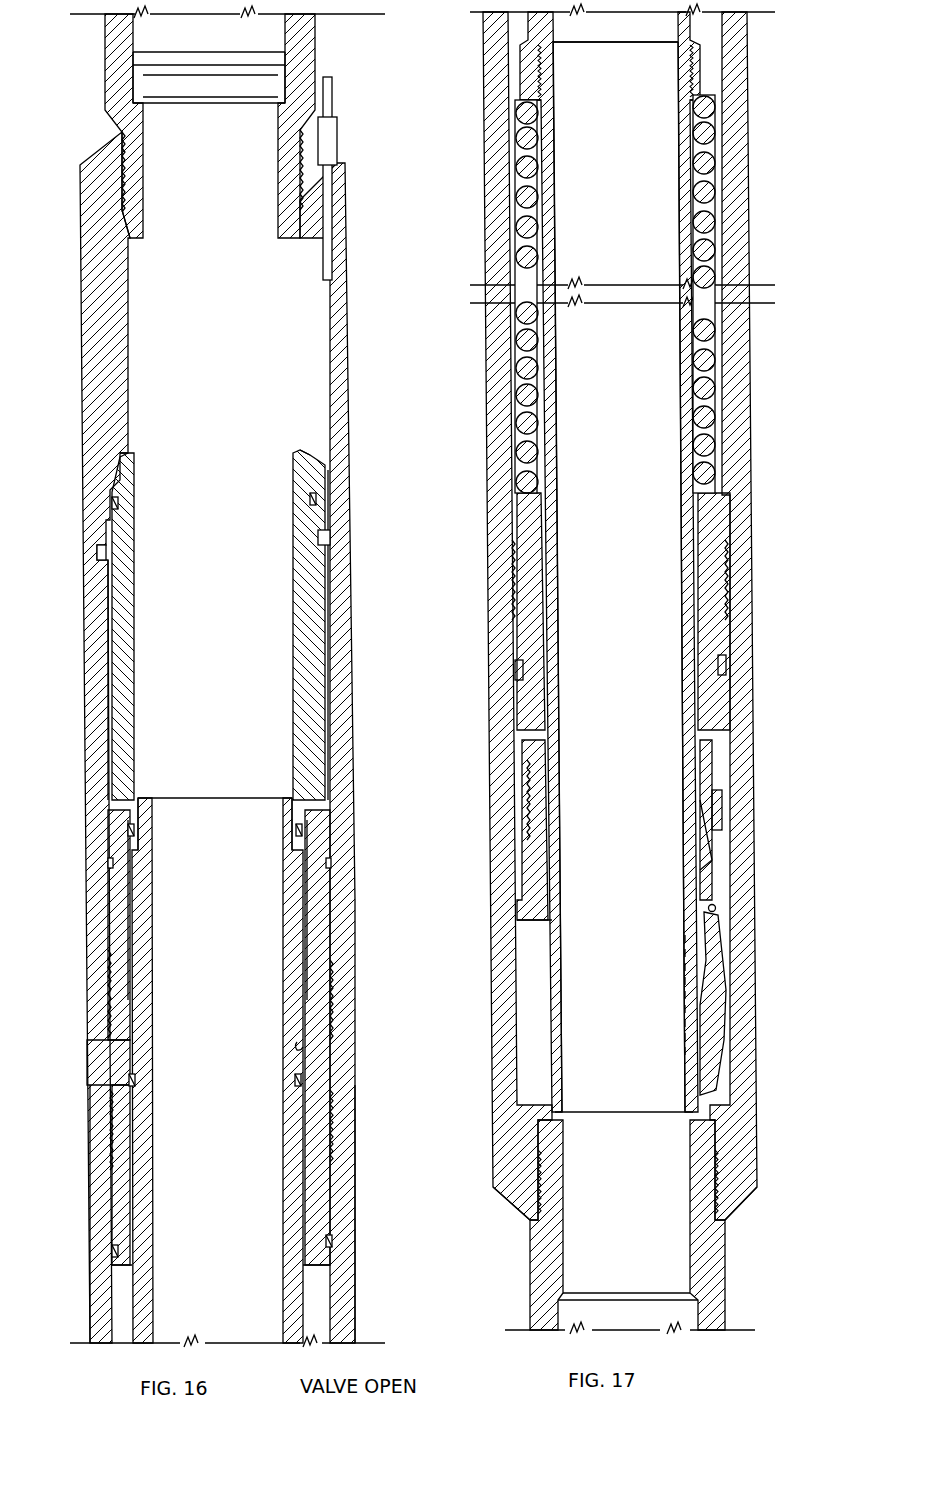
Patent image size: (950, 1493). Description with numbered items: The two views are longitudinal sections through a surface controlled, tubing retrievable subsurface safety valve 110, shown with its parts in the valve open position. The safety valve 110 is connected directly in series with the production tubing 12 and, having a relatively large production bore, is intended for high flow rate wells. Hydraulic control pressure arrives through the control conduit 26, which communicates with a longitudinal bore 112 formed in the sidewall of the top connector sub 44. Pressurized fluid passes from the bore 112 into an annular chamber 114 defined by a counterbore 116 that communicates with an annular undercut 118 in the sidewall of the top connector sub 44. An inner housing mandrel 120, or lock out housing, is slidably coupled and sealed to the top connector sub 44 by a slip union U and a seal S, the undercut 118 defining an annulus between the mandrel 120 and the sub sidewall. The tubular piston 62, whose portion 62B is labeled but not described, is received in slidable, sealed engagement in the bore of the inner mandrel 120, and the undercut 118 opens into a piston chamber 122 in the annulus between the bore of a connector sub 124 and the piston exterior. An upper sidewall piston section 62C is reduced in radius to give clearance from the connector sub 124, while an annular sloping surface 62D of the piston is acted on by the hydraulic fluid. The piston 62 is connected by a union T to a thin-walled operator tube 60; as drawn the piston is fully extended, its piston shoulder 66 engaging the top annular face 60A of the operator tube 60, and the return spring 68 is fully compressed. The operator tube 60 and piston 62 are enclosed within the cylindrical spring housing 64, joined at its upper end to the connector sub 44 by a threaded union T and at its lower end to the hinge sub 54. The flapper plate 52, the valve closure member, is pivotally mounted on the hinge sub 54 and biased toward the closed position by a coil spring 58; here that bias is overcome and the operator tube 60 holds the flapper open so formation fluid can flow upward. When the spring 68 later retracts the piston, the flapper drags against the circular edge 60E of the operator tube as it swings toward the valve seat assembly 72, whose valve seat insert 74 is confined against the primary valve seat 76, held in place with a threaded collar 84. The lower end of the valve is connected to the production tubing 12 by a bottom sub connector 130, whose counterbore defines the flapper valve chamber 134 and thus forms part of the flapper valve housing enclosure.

In FIG. 16, the production tubing 12 is at (285, 62).
In FIG. 17, the production tubing 12 is at (727, 1238).
In FIG. 16, the control conduit 26 is at (336, 95).
In FIG. 16, the top connector sub 44 is at (85, 340).
In FIG. 17, the flapper plate 52 is at (712, 985).
In FIG. 17, the hinge sub 54 is at (724, 875).
In FIG. 17, the coil spring 58 is at (717, 909).
In FIG. 17, the operator tube 60 is at (690, 850).
In FIG. 17, the top annular face of operator tube 60A is at (610, 42).
In FIG. 17, the circular edge of operator tube 60E is at (596, 1113).
In FIG. 16, the piston 62 is at (157, 1196).
In FIG. 17, the piston 62 is at (553, 36).
In FIG. 16, the piston portion of mandrel 62B is at (185, 798).
In FIG. 16, the upper sidewall piston section 62C is at (145, 915).
In FIG. 16, the annular sloping surface 62D is at (296, 1044).
In FIG. 16, the spring housing 64 is at (95, 1306).
In FIG. 17, the spring housing 64 is at (492, 52).
In FIG. 17, the piston shoulder 66 is at (560, 47).
In FIG. 17, the return spring 68 is at (716, 390).
In FIG. 17, the valve seat assembly 72 is at (772, 865).
In FIG. 17, the valve seat insert 74 is at (515, 890).
In FIG. 17, the primary valve seat 76 is at (700, 856).
In FIG. 17, the threaded collar 84 is at (722, 815).
In FIG. 16, the tubing retrievable subsurface safety valve 110 is at (366, 272).
In FIG. 17, the tubing retrievable subsurface safety valve 110 is at (782, 152).
In FIG. 16, the longitudinal bore 112 is at (338, 338).
In FIG. 16, the annular chamber 114 is at (325, 540).
In FIG. 16, the counterbore 116 is at (97, 552).
In FIG. 16, the annular undercut 118 is at (108, 640).
In FIG. 16, the inner housing mandrel 120 is at (120, 710).
In FIG. 16, the piston chamber 122 is at (305, 970).
In FIG. 16, the connector sub 124 is at (90, 1068).
In FIG. 17, the bottom sub connector 130 is at (743, 1125).
In FIG. 17, the flapper valve chamber 134 is at (492, 987).
In FIG. 16, the O-ring seal S is at (112, 503).
In FIG. 17, the O-ring seal S is at (727, 664).
In FIG. 16, the threaded union T is at (115, 180).
In FIG. 17, the threaded union T is at (535, 70).
In FIG. 16, the slip union U is at (120, 470).